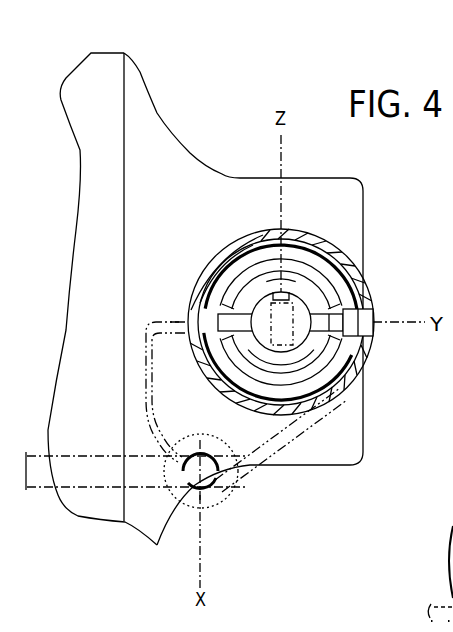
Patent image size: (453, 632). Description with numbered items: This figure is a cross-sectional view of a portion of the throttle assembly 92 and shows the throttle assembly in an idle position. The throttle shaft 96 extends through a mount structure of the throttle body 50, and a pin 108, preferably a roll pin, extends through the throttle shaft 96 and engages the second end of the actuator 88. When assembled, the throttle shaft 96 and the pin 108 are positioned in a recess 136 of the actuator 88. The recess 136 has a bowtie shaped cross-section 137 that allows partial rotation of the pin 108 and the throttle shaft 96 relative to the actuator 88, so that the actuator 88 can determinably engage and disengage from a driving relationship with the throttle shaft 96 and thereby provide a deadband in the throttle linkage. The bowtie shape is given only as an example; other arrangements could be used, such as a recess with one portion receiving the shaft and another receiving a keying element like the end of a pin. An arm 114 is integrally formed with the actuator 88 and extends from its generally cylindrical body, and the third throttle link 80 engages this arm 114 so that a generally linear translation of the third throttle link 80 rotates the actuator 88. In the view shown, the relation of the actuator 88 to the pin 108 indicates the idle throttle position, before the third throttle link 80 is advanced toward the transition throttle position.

The throttle body 50 is at (145, 128).
The throttle assembly 92 is at (306, 70).
The actuator 88 is at (363, 297).
The pin 108 is at (349, 347).
The throttle shaft 96 is at (300, 325).
The recess 136 is at (359, 340).
The bowtie shaped cross-section 137 is at (293, 286).
The arm 114 is at (286, 462).
The third throttle link 80 is at (80, 479).